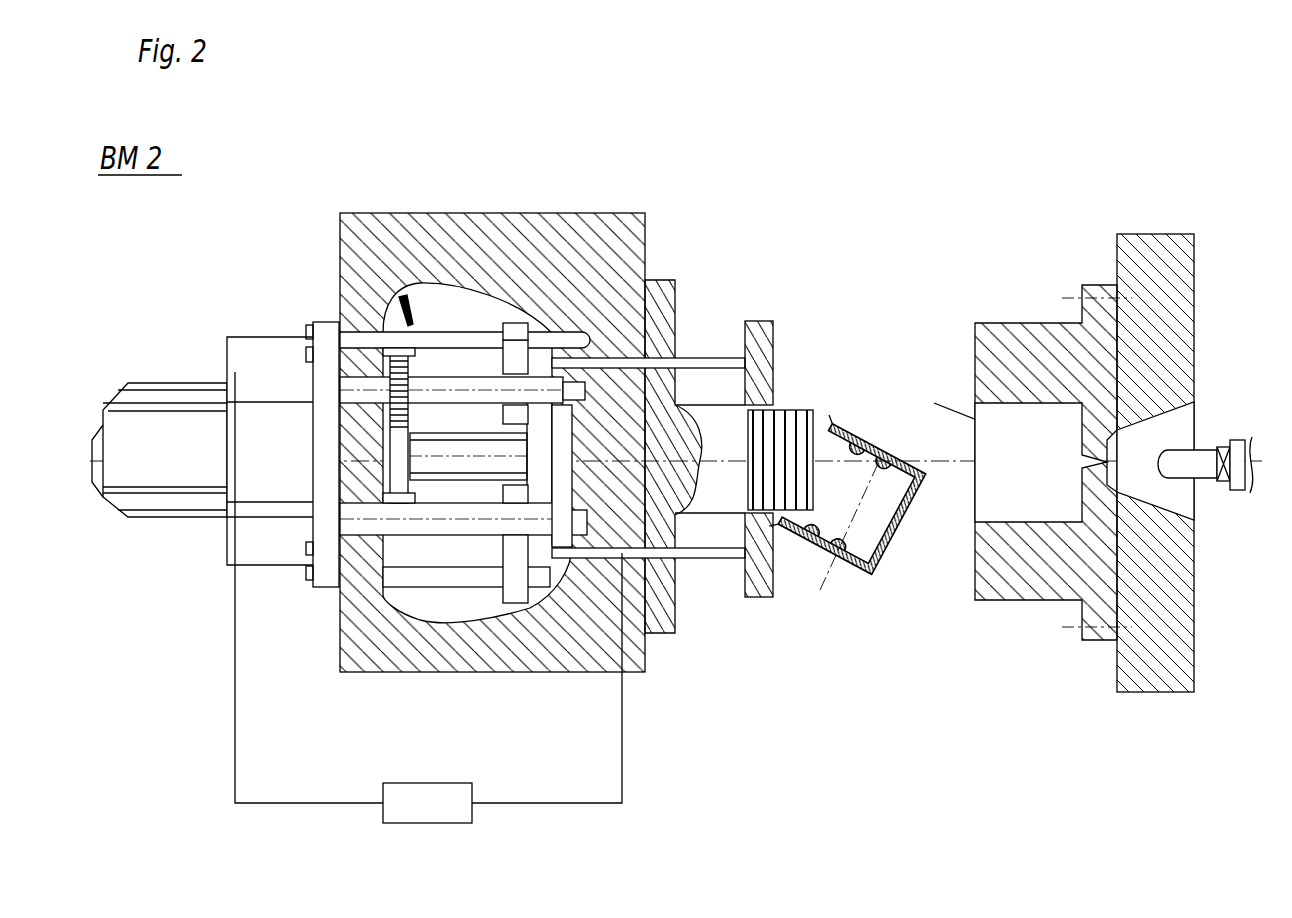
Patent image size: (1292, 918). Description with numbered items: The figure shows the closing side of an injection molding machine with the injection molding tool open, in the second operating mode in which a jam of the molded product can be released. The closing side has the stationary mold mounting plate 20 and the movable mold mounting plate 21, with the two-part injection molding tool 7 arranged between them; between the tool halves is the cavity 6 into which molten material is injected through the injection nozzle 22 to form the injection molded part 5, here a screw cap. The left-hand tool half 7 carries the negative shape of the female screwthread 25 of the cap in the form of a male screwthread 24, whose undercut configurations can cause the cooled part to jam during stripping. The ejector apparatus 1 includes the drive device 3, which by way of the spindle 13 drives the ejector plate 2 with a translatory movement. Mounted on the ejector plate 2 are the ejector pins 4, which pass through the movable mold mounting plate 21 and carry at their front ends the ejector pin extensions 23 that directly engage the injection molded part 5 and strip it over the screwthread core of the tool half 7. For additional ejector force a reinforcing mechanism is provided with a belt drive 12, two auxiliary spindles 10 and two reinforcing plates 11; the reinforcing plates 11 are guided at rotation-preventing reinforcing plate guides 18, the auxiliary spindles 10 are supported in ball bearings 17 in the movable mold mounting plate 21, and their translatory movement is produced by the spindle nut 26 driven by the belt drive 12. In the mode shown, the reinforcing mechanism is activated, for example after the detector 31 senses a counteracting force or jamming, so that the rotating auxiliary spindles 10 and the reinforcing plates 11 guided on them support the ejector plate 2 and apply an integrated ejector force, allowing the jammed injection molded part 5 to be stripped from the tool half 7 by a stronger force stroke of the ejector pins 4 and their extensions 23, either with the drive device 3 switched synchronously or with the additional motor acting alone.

The ejector apparatus 1 is at (400, 300).
The ejector plate 2 is at (562, 555).
The drive device 3 is at (160, 422).
The ejector pins 4 is at (700, 360).
The injection molded part 5 is at (856, 592).
The cavity 6 is at (972, 407).
The injection molding tool 7 is at (1030, 348).
The auxiliary spindles 10 is at (470, 385).
The reinforcing plates 11 is at (515, 345).
The belt drive 12 is at (388, 500).
The spindle 13 is at (458, 470).
The ball bearings 17 is at (588, 395).
The reinforcing plate guides 18 is at (430, 338).
The stationary mold mounting plate 20 is at (1153, 262).
The movable mold mounting plate 21 is at (510, 322).
The injection nozzle 22 is at (1192, 456).
The ejector pin extensions 23 is at (756, 322).
The male screwthread 24 is at (785, 410).
The female screwthread 25 is at (841, 543).
The spindle nut 26 is at (380, 577).
The detector 31 is at (445, 815).